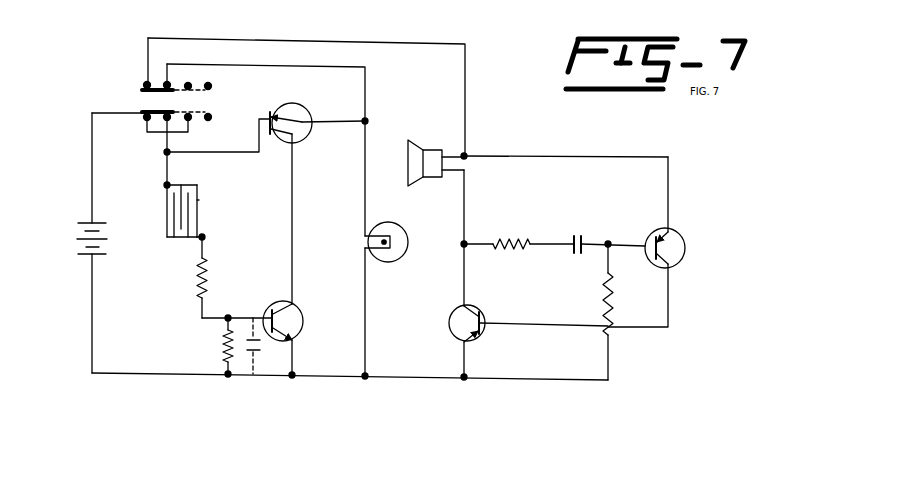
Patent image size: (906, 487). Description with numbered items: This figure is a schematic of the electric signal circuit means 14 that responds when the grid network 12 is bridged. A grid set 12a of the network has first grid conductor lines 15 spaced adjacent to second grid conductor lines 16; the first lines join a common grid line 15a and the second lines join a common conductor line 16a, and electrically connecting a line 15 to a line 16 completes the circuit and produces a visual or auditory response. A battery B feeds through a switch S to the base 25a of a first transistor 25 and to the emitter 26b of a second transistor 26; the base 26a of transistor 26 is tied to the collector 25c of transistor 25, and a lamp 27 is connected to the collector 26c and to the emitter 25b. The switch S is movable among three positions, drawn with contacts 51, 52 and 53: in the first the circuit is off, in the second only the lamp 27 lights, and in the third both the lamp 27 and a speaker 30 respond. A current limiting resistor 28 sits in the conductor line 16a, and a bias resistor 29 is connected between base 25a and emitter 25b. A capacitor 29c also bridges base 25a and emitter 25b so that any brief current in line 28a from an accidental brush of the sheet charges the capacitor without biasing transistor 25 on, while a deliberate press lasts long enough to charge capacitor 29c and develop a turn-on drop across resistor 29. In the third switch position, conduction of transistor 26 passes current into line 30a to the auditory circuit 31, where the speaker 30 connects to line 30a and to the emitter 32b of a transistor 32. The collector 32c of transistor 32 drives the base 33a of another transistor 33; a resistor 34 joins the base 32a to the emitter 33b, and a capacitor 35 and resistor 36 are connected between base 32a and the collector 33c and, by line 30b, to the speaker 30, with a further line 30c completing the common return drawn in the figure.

The grid network 12 is at (179, 220).
The grid set 12a is at (200, 200).
The electric signal circuit means 14 is at (590, 393).
The first grid conductor lines 15 is at (166, 215).
The common grid line 15a is at (170, 168).
The second grid conductor lines 16 is at (172, 236).
The common conductor line 16a is at (204, 245).
The first transistor 25 is at (285, 272).
The base of transistor 25 25a is at (268, 318).
The emitter of transistor 25 25b is at (292, 378).
The collector of transistor 25 25c is at (294, 298).
The second transistor 26 is at (291, 129).
The base of transistor 26 26a is at (298, 178).
The emitter of transistor 26 26b is at (265, 118).
The collector of transistor 26 26c is at (331, 120).
The lamp 27 is at (394, 223).
The current limiting resistor 28 is at (208, 280).
The line 28a is at (200, 312).
The bias resistor 29 is at (224, 345).
The capacitor 29c is at (253, 362).
The speaker 30 is at (432, 150).
The line 30a is at (404, 42).
The line 30b is at (466, 196).
The common lead 30c is at (520, 380).
The auditory circuit 31 is at (490, 153).
The transistor 32 is at (656, 242).
The base of transistor 32 32a is at (627, 244).
The emitter of transistor 32 32b is at (670, 226).
The collector of transistor 32 32c is at (680, 262).
The transistor 33 is at (507, 306).
The base of transistor 33 33a is at (498, 323).
The emitter of transistor 33 33b is at (462, 350).
The collector of transistor 33 33c is at (464, 286).
The resistor 34 is at (603, 291).
The capacitor 35 is at (573, 238).
The resistor 36 is at (525, 240).
The switch contact 51 is at (207, 83).
The switch contact 52 is at (186, 83).
The switch contact 53 is at (147, 82).
The switch S is at (164, 88).
The battery B is at (79, 237).